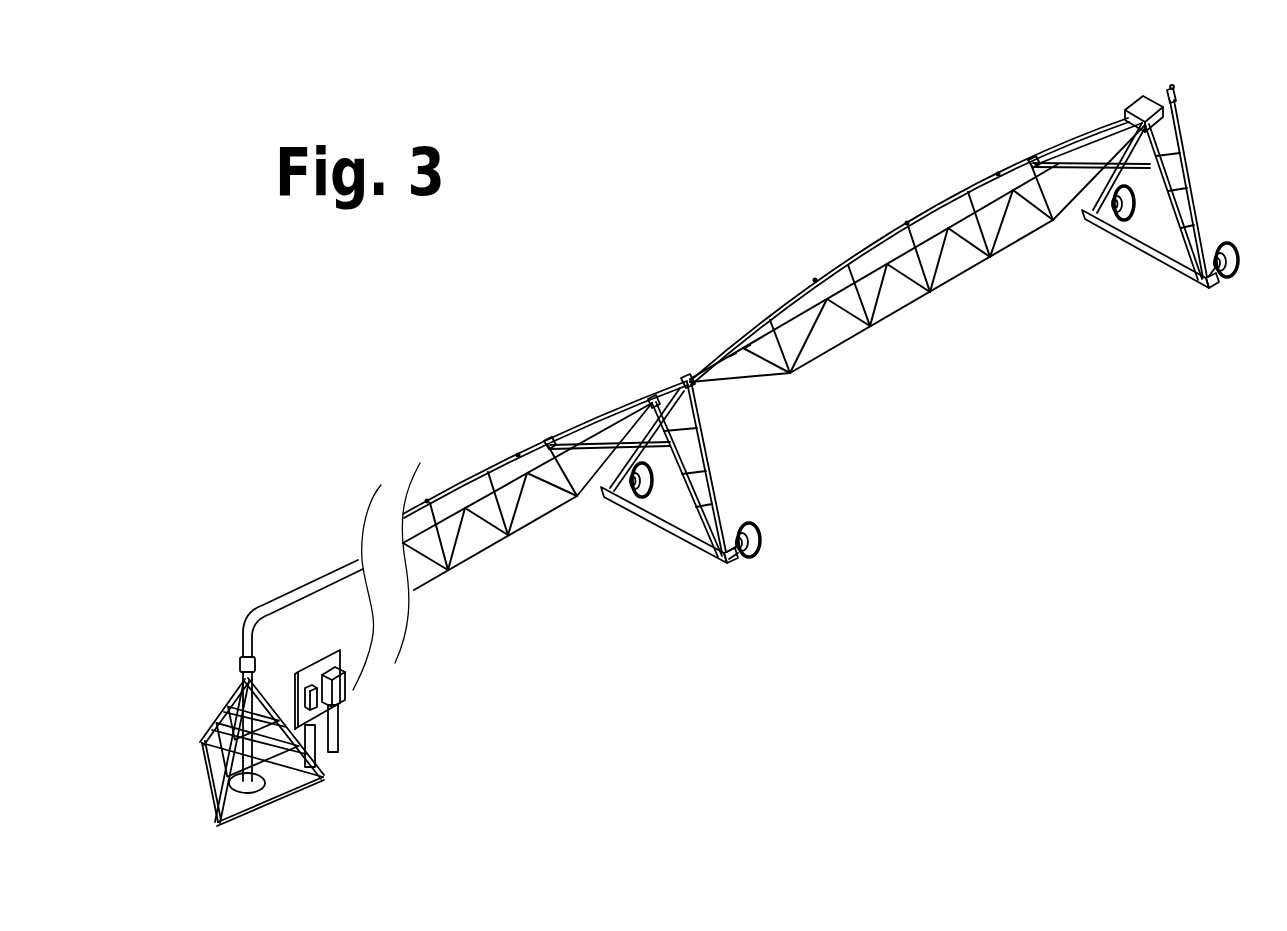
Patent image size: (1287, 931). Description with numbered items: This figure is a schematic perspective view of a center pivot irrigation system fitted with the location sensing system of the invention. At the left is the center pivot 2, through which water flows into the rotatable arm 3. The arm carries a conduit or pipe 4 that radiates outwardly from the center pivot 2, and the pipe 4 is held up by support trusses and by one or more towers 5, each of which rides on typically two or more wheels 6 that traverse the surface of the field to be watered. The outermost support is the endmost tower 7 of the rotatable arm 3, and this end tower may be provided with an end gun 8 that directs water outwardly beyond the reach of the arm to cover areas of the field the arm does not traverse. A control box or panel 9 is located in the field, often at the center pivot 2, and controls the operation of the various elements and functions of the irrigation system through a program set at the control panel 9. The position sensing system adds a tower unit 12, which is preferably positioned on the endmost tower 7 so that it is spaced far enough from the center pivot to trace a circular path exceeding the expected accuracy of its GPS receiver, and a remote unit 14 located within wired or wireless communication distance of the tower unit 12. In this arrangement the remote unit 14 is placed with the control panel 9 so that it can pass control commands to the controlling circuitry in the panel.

The center pivot 2 is at (228, 652).
The rotatable arm 3 is at (930, 290).
The conduit or pipe 4 is at (780, 303).
The tower 5 is at (703, 457).
The wheels 6 is at (647, 493).
The endmost tower 7 is at (1190, 192).
The end gun 8 is at (1173, 92).
The control box or panel 9 is at (335, 692).
The tower unit 12 is at (1142, 103).
The remote unit 14 is at (1113, 213).